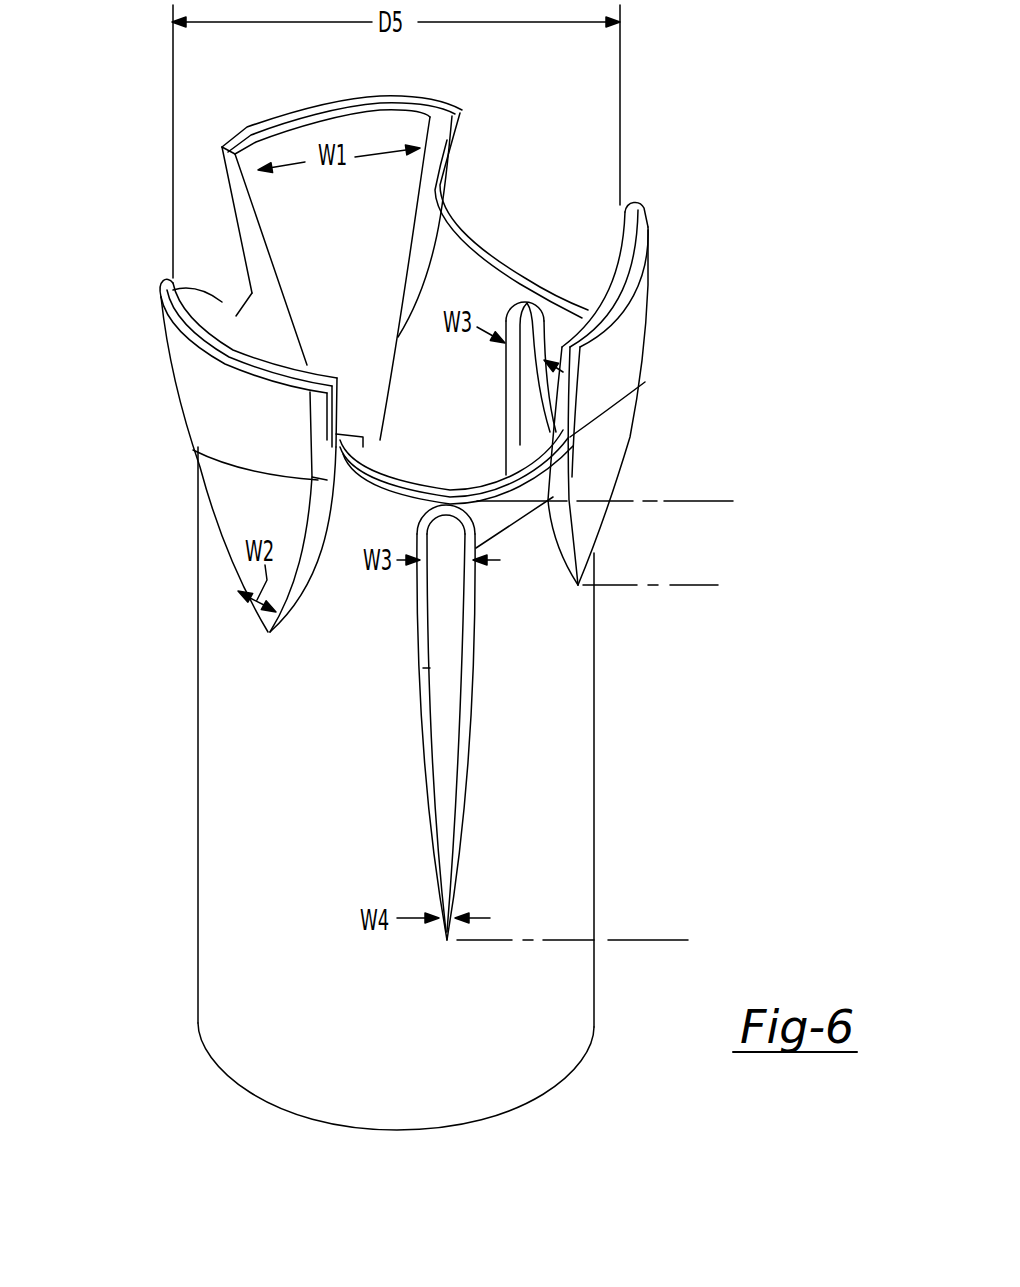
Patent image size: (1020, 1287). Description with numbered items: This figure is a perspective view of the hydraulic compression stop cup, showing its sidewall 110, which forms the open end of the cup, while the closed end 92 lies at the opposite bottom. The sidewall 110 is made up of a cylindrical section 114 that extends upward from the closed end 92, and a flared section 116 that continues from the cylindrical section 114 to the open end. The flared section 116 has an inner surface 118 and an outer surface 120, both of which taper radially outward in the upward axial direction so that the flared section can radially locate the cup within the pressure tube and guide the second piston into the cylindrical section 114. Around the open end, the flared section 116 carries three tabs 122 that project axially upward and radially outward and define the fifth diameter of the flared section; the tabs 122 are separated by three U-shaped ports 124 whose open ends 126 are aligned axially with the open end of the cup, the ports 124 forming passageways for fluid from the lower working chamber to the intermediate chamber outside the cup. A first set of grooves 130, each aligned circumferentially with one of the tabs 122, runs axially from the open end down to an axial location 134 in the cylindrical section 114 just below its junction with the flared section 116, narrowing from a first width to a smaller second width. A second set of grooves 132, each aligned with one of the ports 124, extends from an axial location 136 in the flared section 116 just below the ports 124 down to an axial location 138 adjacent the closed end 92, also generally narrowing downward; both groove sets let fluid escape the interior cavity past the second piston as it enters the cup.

The closed end 92 is at (552, 1085).
The sidewall 110 is at (181, 517).
The cylindrical section 114 is at (556, 774).
The flared section 116 is at (540, 474).
The inner surface 118 is at (474, 293).
The outer surface 120 is at (222, 412).
The tabs 122 is at (363, 97).
The ports 124 is at (173, 297).
The open ends 126 is at (192, 193).
The first set of grooves 130 is at (378, 181).
The second set of grooves 132 is at (527, 403).
The axial location 134 is at (669, 586).
The axial location 136 is at (624, 501).
The axial location 138 is at (591, 939).